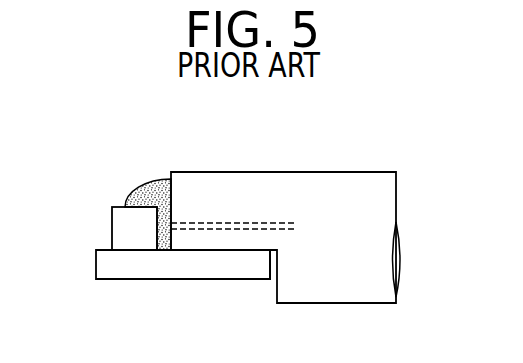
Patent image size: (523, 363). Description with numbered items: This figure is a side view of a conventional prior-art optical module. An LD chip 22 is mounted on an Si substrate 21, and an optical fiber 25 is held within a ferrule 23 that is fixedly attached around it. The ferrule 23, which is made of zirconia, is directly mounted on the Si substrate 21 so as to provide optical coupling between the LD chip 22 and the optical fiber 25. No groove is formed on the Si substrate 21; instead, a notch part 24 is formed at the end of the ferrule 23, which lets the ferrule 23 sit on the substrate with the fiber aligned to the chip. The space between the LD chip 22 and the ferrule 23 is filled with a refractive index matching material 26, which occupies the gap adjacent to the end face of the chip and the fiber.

The Si substrate 21 is at (168, 275).
The LD chip 22 is at (123, 227).
The ferrule 23 is at (385, 189).
The notch part 24 is at (228, 253).
The optical fiber 25 is at (246, 223).
The refractive index matching material 26 is at (150, 188).